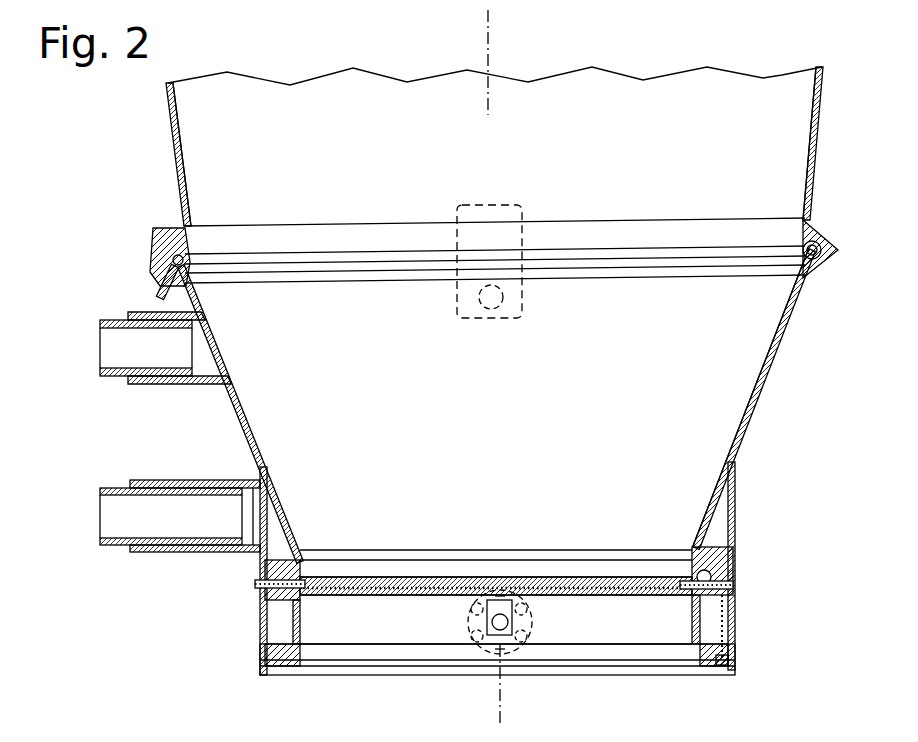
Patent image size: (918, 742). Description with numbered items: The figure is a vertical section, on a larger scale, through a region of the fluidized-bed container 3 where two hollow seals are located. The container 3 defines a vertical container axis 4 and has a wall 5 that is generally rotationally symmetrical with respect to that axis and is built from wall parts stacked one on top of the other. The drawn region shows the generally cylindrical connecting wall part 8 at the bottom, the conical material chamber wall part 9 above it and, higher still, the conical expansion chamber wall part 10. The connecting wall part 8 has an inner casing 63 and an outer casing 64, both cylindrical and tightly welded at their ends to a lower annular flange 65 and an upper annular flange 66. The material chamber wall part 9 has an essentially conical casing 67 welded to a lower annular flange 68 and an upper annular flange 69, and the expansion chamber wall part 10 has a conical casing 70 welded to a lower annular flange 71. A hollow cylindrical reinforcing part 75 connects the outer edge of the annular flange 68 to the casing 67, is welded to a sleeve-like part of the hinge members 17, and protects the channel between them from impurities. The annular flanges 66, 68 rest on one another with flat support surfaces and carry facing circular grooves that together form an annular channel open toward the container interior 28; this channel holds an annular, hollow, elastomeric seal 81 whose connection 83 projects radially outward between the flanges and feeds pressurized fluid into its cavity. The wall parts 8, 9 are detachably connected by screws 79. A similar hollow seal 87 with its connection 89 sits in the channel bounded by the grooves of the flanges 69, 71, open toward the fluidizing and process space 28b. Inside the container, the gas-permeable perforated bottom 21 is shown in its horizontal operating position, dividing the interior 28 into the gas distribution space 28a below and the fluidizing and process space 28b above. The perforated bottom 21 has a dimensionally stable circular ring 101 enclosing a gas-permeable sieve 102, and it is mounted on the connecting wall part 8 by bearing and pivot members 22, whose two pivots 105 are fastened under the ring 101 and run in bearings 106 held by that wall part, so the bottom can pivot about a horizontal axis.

The fluidized-bed container 3 is at (168, 128).
The container axis 4 is at (492, 48).
The wall 5 is at (175, 168).
The connecting wall part 8 is at (740, 612).
The material chamber wall part 9 is at (760, 400).
The expansion chamber wall part 10 is at (812, 155).
The hinge members 17 is at (178, 380).
The perforated bottom 21 is at (352, 600).
The bearing and pivot members 22 is at (493, 638).
The container interior 28 is at (388, 630).
The gas distribution space 28a is at (413, 632).
The fluidizing and process space 28b is at (773, 90).
The inner casing 63 is at (308, 610).
The outer casing 64 is at (262, 620).
The annular flange 65 is at (740, 658).
The annular flange 66 is at (740, 585).
The conical casing 67 is at (780, 350).
The annular flange 68 is at (735, 555).
The annular flange 69 is at (820, 275).
The conical casing 70 is at (815, 112).
The annular flange 71 is at (825, 235).
The reinforcing part 75 is at (740, 508).
The screws 79 is at (738, 632).
The hollow seal 81 is at (298, 590).
The connection 83 is at (258, 584).
The hollow seal 87 is at (183, 258).
The connection 89 is at (150, 272).
The ring 101 is at (313, 596).
The sieve 102 is at (605, 596).
The pivots 105 is at (508, 636).
The bearings 106 is at (533, 620).